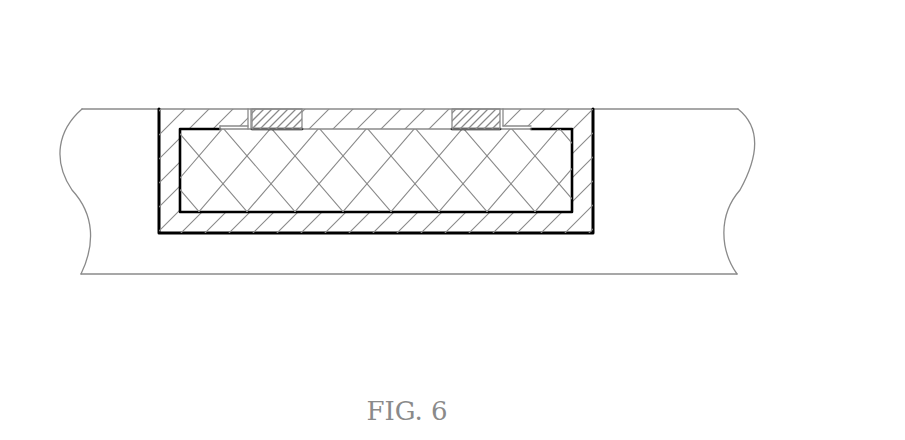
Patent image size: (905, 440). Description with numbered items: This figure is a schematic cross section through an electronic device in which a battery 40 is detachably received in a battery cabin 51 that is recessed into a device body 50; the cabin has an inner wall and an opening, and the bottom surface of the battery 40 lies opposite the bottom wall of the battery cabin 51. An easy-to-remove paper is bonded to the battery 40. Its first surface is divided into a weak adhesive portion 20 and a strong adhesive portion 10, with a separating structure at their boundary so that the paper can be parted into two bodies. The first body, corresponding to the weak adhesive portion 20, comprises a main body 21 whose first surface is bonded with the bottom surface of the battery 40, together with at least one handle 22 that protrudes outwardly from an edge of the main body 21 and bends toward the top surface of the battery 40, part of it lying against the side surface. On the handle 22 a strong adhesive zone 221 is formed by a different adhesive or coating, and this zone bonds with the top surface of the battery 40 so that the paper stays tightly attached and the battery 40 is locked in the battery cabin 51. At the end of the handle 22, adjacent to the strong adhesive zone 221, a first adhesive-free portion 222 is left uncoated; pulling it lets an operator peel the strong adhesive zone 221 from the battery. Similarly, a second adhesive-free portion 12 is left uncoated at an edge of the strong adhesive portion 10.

The strong adhesive portion 10 is at (279, 124).
The second adhesive-free portion 12 is at (500, 110).
The weak adhesive portion 20 is at (472, 275).
The main body 21 is at (307, 222).
The handle 22 is at (196, 74).
The strong adhesive zone 221 is at (197, 128).
The first adhesive-free portion 222 is at (226, 99).
The battery 40 is at (398, 172).
The device body 50 is at (687, 152).
The battery cabin 51 is at (593, 213).